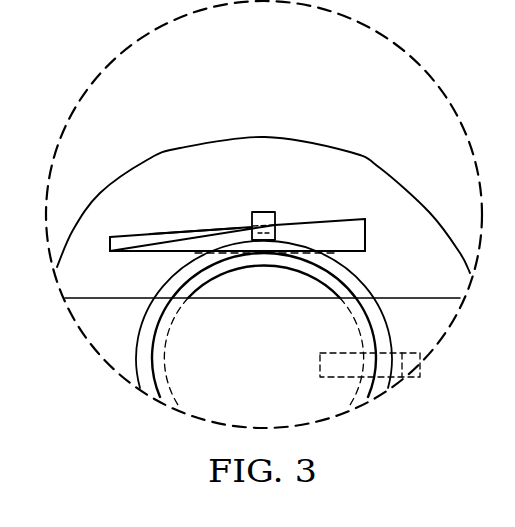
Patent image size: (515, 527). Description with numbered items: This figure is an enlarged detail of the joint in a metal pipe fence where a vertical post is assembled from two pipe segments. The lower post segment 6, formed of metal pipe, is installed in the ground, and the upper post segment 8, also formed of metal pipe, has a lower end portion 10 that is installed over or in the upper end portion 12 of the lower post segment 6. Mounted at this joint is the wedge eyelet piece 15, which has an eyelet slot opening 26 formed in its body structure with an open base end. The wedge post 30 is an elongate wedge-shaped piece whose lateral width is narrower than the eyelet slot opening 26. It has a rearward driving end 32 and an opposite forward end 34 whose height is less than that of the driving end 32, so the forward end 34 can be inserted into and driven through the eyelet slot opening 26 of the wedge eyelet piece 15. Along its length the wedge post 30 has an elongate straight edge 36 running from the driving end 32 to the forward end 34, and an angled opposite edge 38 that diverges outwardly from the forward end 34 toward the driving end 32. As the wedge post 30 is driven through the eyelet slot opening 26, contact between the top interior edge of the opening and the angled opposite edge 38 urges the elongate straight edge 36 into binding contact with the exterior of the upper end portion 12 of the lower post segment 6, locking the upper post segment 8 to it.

The lower post segment 6 is at (287, 270).
The upper post segment 8 is at (138, 341).
The lower end portion 10 is at (388, 335).
The upper end portion 12 is at (164, 357).
The wedge eyelet piece 15 is at (263, 212).
The eyelet slot opening 26 is at (280, 228).
The wedge post 30 is at (245, 225).
The driving end 32 is at (367, 237).
The forward end 34 is at (110, 243).
The elongate straight edge 36 is at (158, 252).
The angled opposite edge 38 is at (171, 232).